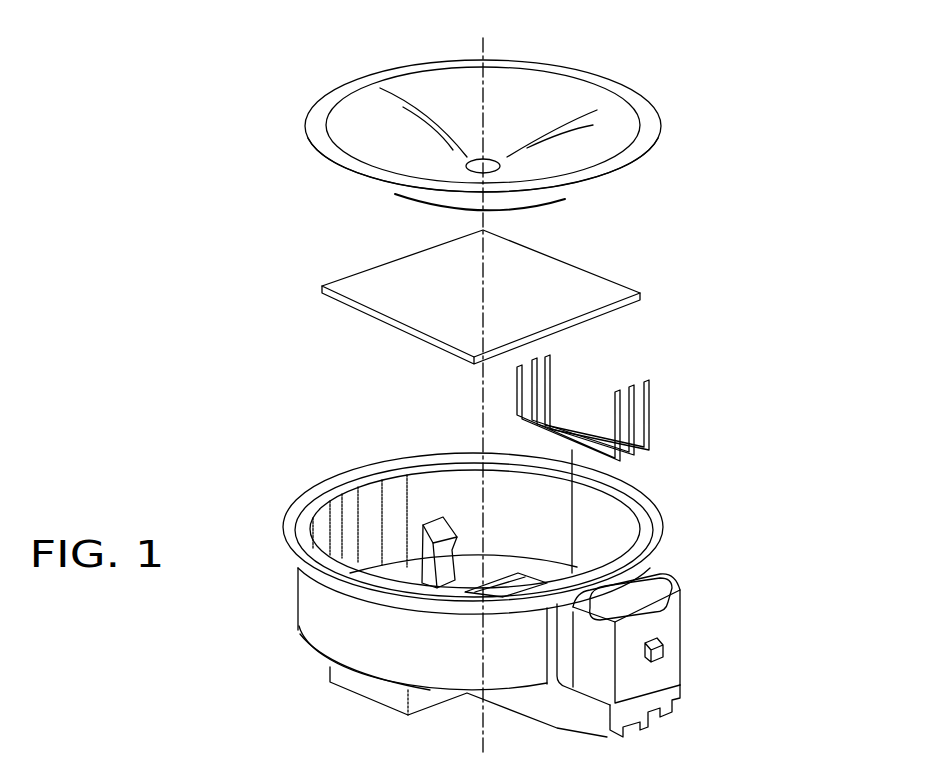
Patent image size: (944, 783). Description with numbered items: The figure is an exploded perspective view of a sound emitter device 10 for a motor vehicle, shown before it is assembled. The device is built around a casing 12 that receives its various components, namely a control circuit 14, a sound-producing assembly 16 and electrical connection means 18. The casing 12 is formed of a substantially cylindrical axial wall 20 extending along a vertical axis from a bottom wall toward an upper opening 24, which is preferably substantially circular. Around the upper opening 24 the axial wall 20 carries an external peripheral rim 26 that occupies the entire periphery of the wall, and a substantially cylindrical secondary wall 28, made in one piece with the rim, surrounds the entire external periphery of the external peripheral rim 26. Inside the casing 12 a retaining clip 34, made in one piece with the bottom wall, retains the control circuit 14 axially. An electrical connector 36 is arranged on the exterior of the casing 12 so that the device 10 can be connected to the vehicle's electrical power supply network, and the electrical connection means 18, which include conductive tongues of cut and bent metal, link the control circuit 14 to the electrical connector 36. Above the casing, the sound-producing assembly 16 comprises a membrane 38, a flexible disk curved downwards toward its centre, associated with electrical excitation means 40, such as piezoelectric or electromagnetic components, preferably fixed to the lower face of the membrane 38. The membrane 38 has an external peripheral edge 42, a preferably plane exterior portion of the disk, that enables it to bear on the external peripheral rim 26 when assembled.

The sound emitter device 10 is at (715, 110).
The casing 12 is at (183, 646).
The control circuit 14 is at (385, 272).
The sound-producing assembly 16 is at (646, 86).
The electrical connection means 18 is at (659, 387).
The axial wall 20 is at (315, 632).
The upper opening 24 is at (372, 503).
The external peripheral rim 26 is at (310, 515).
The secondary wall 28 is at (298, 561).
The retaining clip 34 is at (445, 527).
The electrical connector 36 is at (663, 612).
The membrane 38 is at (547, 85).
The electrical excitation means 40 is at (523, 208).
The external peripheral edge 42 is at (340, 92).